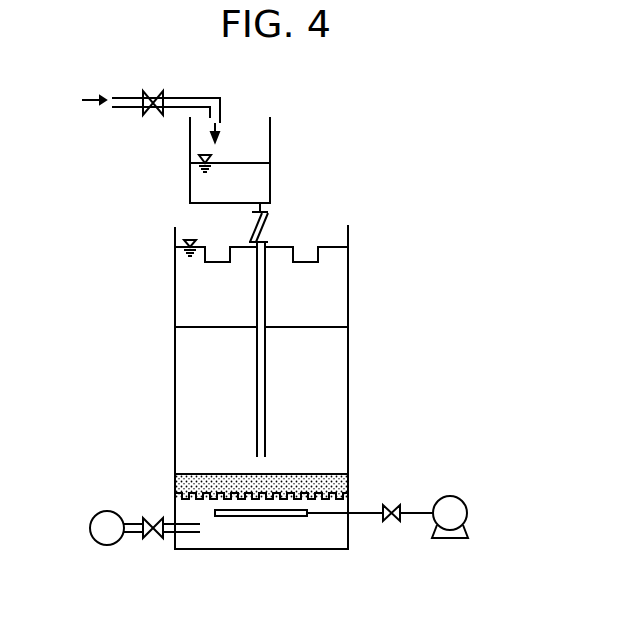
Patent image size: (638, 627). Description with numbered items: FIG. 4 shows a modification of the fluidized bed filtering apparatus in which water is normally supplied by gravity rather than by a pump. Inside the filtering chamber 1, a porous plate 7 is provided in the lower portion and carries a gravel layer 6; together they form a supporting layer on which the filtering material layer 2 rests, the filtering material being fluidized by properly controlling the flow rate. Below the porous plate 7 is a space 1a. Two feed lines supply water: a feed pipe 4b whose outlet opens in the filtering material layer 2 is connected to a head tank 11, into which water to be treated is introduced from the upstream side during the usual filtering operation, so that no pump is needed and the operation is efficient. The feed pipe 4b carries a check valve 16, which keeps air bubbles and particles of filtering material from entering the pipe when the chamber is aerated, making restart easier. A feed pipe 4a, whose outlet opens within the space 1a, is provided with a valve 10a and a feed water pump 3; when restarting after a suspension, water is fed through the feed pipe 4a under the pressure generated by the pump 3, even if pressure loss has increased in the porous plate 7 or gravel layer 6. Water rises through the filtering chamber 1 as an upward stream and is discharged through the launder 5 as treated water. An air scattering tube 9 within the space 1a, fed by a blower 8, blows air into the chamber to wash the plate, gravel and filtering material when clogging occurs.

The filtering chamber 1 is at (350, 292).
The space 1a is at (325, 550).
The filtering material layer 2 is at (338, 382).
The feed water pump 3 is at (90, 528).
The first feed pipe 4a is at (193, 536).
The second feed pipe 4b is at (257, 305).
The launder 5 is at (320, 243).
The gravel layer 6 is at (349, 479).
The porous plate 7 is at (349, 498).
The blower 8 is at (468, 513).
The air scattering tube 9 is at (253, 517).
The valve 10a is at (152, 540).
The head tank 11 is at (271, 128).
The check valve 16 is at (265, 228).